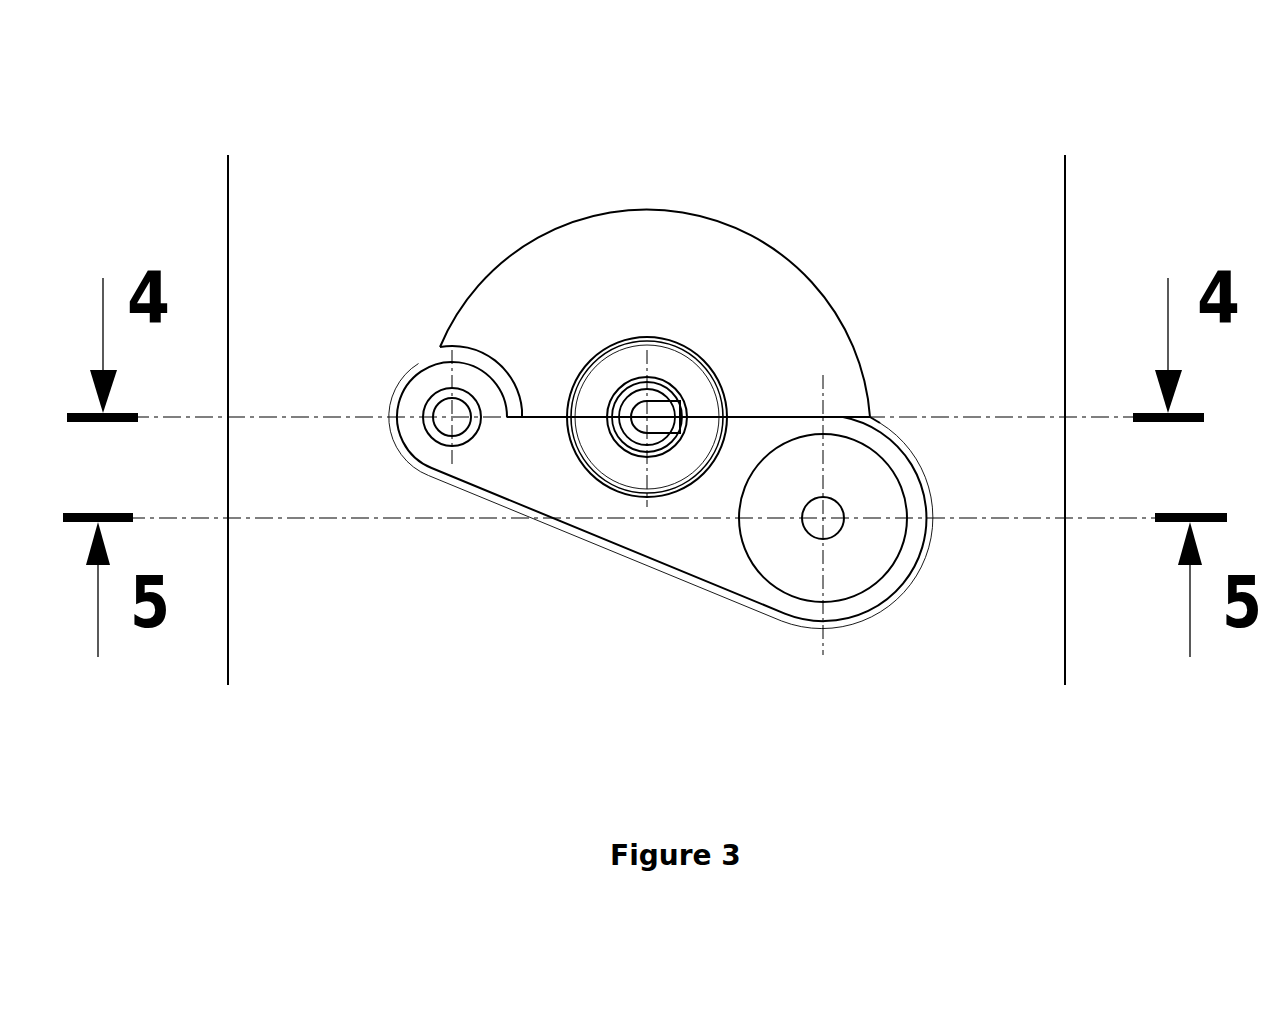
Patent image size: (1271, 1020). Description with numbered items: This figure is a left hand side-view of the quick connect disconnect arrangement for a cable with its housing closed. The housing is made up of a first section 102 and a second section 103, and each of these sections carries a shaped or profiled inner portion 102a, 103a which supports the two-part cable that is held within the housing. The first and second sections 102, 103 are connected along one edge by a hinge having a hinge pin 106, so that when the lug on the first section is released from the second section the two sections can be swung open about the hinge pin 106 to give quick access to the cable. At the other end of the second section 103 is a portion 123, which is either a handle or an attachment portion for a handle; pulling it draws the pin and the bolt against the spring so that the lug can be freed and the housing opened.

The first section 102 is at (767, 290).
The shaped or profiled inner portion 102a is at (618, 378).
The second section 103 is at (699, 542).
The shaped or profiled inner portion 103a is at (613, 456).
The hinge pin 106 is at (452, 410).
The portion 123 is at (880, 542).